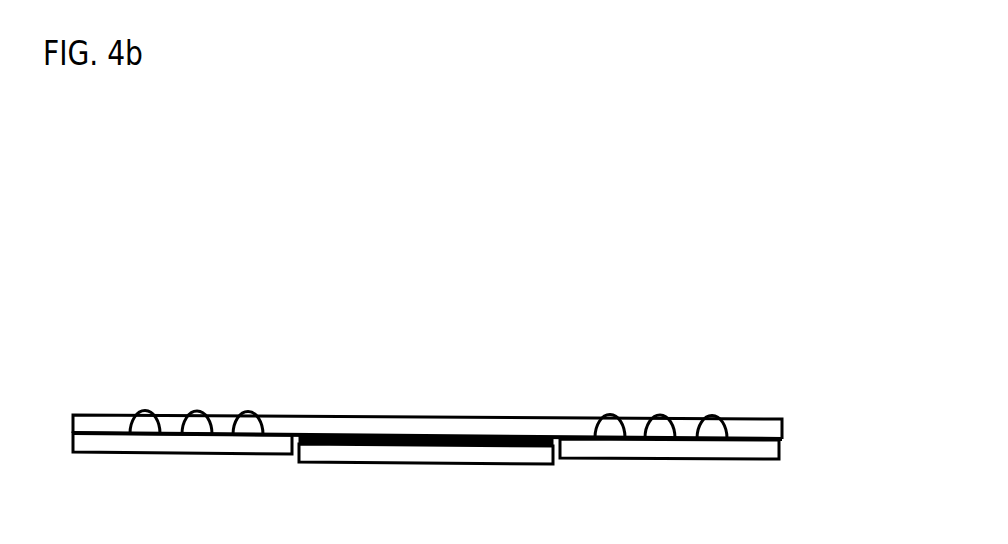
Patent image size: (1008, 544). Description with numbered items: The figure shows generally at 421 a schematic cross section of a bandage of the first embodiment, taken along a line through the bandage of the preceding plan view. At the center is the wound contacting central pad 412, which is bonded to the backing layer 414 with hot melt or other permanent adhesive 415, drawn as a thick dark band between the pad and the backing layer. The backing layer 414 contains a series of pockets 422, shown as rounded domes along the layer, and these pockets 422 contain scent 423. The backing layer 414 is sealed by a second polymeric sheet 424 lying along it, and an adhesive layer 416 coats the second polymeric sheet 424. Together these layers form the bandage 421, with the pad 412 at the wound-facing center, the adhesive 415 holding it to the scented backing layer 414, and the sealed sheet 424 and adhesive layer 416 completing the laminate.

The bandage cross section 421 is at (645, 270).
The wound contacting central pad 412 is at (328, 453).
The backing layer 414 is at (168, 428).
The permanent adhesive 415 is at (412, 438).
The adhesive layer 416 is at (85, 450).
The pockets 422 is at (607, 417).
The scent 423 is at (250, 428).
The second polymeric sheet 424 is at (743, 443).